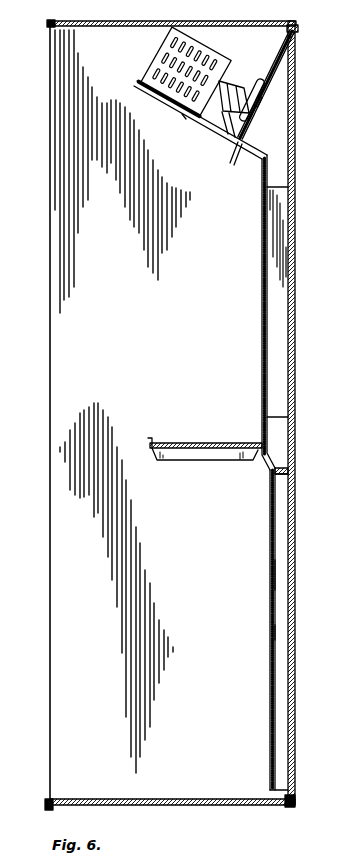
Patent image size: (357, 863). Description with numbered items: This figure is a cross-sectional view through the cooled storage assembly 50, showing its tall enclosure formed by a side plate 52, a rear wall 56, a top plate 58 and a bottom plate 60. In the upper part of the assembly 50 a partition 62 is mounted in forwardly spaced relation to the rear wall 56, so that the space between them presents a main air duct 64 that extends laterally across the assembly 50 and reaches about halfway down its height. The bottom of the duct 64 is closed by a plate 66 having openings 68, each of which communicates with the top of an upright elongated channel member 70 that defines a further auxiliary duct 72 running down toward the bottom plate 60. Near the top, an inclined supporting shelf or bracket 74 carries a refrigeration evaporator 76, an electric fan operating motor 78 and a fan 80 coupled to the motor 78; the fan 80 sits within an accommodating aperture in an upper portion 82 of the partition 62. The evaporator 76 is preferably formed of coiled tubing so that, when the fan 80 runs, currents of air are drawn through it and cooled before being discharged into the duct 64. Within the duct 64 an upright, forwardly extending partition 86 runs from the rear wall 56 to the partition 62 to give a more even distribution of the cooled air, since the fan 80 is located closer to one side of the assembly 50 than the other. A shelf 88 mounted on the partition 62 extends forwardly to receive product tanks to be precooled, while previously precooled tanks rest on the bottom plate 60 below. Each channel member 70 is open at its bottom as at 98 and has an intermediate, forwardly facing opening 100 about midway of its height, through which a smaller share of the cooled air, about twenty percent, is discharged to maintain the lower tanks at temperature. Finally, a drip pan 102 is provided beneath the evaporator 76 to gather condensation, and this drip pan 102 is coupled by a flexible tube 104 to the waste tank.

The assembly 50 is at (48, 229).
The side plate 52 is at (70, 362).
The rear wall 56 is at (296, 92).
The top plate 58 is at (227, 23).
The bottom plate 60 is at (213, 805).
The partition 62 is at (262, 274).
The main air duct 64 is at (280, 133).
The plate 66 is at (268, 471).
The openings 68 is at (277, 486).
The channel member 70 is at (270, 528).
The auxiliary duct 72 is at (278, 573).
The supporting shelf or bracket 74 is at (137, 82).
The refrigeration evaporator 76 is at (211, 53).
The electric fan operating motor 78 is at (229, 83).
The fan 80 is at (260, 99).
The upper portion of the partition 82 is at (278, 59).
The partition 86 is at (271, 238).
The shelf 88 is at (189, 444).
The bottom opening 98 is at (272, 789).
The forwardly facing opening 100 is at (272, 632).
The drip pan 102 is at (186, 119).
The flexible tube 104 is at (231, 153).